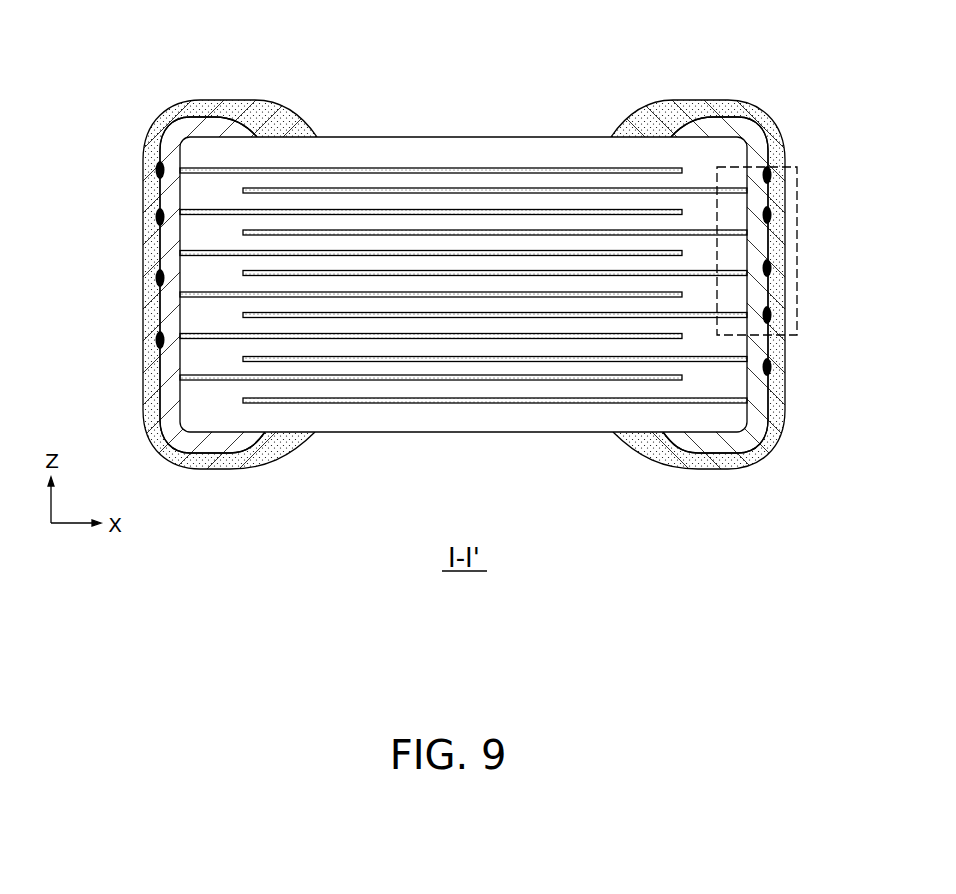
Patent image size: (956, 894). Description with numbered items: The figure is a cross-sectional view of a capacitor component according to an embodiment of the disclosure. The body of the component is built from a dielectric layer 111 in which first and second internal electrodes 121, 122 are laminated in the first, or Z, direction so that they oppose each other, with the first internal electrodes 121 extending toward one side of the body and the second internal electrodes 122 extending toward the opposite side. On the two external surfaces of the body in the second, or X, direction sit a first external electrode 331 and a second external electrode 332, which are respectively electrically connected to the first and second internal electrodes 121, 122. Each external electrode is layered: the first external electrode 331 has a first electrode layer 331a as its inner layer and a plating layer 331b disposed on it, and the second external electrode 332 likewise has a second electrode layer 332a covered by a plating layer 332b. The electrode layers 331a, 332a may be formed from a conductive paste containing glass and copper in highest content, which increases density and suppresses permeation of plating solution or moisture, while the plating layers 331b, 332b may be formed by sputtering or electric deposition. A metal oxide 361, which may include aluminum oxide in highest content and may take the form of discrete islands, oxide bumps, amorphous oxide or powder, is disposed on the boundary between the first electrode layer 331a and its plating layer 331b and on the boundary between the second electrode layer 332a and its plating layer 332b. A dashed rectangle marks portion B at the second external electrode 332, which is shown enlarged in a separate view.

The dielectric layer 111 is at (478, 267).
The first internal electrode 121 is at (180, 378).
The second internal electrode 122 is at (377, 403).
The first external electrode 331 is at (304, 267).
The first electrode layer 331a is at (280, 48).
The plating layer 331b is at (262, 118).
The second external electrode 332 is at (638, 267).
The second electrode layer 332a is at (730, 128).
The plating layer 332b is at (743, 48).
The metal oxide 361 is at (772, 367).
The portion B is at (797, 167).